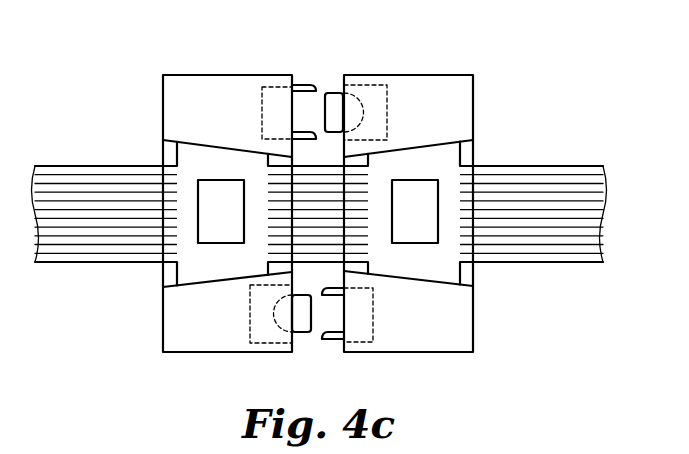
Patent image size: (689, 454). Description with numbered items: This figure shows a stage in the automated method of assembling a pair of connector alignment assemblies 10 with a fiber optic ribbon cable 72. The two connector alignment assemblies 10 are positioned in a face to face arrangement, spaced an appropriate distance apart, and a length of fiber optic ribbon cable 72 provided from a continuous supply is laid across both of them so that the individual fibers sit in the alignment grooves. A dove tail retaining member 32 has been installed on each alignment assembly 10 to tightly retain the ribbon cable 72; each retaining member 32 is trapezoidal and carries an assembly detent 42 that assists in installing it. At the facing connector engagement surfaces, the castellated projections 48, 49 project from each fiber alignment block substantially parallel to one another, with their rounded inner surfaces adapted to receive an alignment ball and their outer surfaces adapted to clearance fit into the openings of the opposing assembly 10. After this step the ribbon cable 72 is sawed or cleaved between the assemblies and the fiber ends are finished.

The connector alignment assembly 10 is at (158, 76).
The dove tail retaining member 32 is at (158, 281).
The assembly detent 42 is at (208, 221).
The castellated projection 48 is at (326, 93).
The castellated projection 49 is at (308, 84).
The fiber optic ribbon cable 72 is at (548, 166).